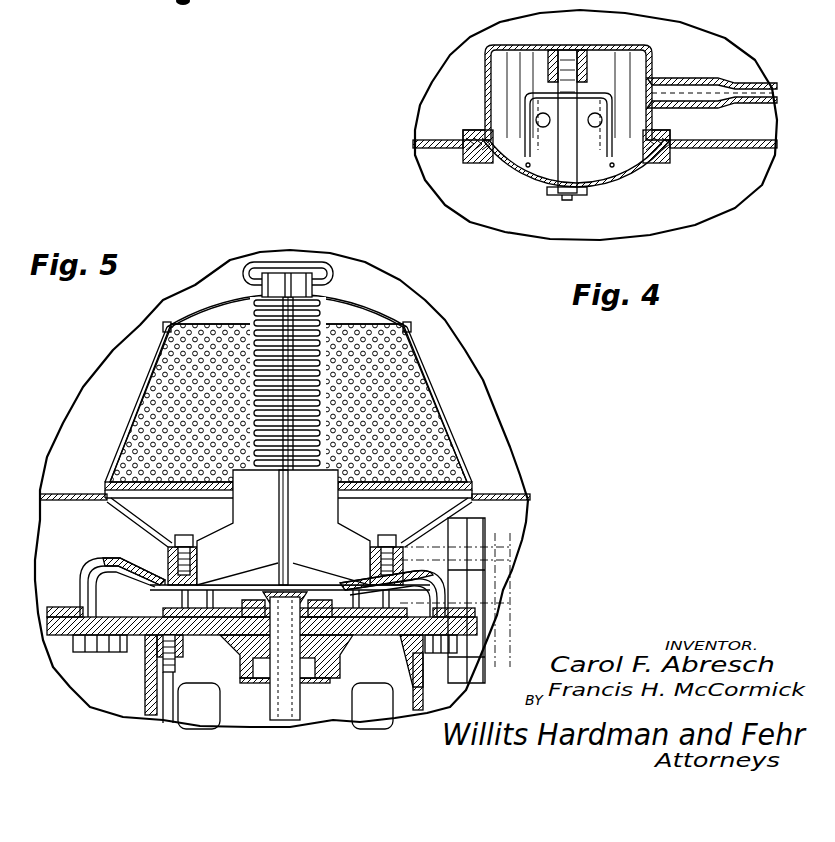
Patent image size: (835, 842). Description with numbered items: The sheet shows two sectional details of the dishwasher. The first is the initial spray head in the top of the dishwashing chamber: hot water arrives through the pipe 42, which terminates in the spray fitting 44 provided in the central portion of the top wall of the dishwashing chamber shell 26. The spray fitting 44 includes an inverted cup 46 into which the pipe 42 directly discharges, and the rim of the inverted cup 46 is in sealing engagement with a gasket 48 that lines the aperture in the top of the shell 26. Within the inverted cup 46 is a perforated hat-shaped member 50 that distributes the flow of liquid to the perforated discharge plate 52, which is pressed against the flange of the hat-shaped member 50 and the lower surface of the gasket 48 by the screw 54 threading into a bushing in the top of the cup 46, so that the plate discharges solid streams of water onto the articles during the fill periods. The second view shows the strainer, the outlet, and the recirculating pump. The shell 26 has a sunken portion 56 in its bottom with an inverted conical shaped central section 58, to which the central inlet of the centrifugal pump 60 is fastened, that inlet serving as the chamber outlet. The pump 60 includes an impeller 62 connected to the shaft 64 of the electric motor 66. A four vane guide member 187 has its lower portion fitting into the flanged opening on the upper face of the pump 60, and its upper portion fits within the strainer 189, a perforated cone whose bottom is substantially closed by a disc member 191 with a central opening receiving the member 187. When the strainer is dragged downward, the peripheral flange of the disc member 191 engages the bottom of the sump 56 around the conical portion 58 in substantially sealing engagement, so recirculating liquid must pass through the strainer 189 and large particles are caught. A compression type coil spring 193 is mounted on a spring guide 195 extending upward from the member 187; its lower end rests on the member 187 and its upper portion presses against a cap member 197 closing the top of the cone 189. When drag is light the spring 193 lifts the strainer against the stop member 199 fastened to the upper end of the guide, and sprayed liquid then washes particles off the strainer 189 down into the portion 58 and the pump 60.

In FIG. 4, the dishwashing chamber shell 26 is at (427, 142).
In FIG. 4, the pipe 42 is at (745, 80).
In FIG. 4, the spray fitting 44 is at (523, 178).
In FIG. 4, the inverted cup 46 is at (487, 58).
In FIG. 4, the gasket 48 is at (465, 148).
In FIG. 4, the perforated hat-shaped member 50 is at (528, 160).
In FIG. 4, the perforated discharge plate 52 is at (620, 176).
In FIG. 4, the screw 54 is at (574, 194).
In FIG. 5, the sunken portion 56 is at (517, 494).
In FIG. 5, the inverted conical shaped central section 58 is at (122, 508).
In FIG. 5, the centrifugal pump 60 is at (102, 560).
In FIG. 5, the impeller 62 is at (172, 592).
In FIG. 5, the shaft 64 is at (280, 647).
In FIG. 5, the electric motor 66 is at (196, 712).
In FIG. 5, the four vane guide member 187 is at (340, 540).
In FIG. 5, the strainer 189 is at (437, 408).
In FIG. 5, the disc member 191 is at (150, 487).
In FIG. 5, the compression type coil spring 193 is at (258, 310).
In FIG. 5, the spring guide 195 is at (312, 290).
In FIG. 5, the cap member 197 is at (190, 320).
In FIG. 5, the stop member 199 is at (286, 263).